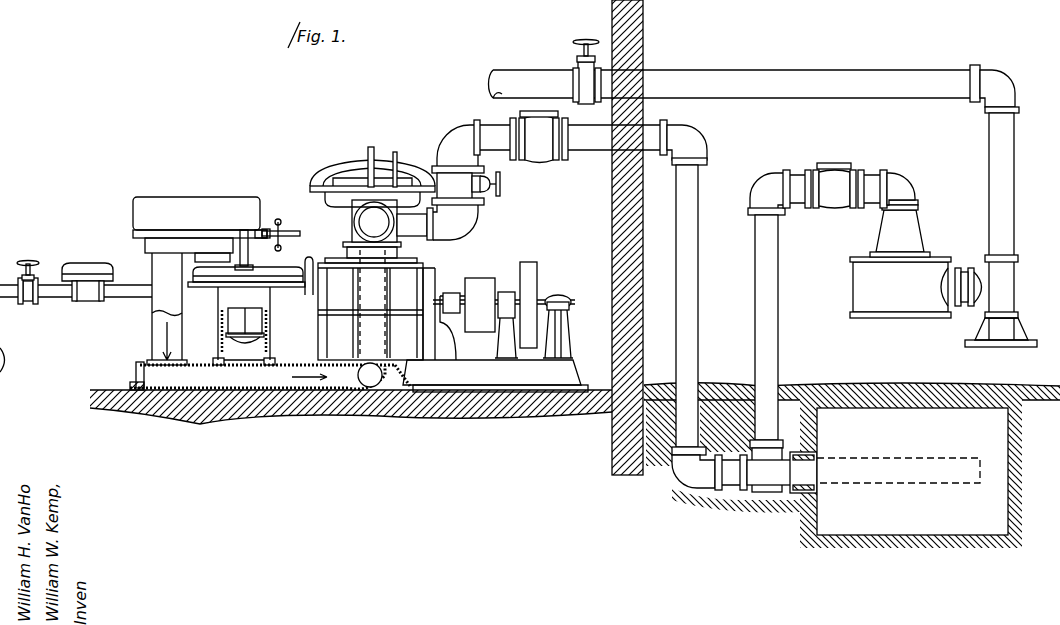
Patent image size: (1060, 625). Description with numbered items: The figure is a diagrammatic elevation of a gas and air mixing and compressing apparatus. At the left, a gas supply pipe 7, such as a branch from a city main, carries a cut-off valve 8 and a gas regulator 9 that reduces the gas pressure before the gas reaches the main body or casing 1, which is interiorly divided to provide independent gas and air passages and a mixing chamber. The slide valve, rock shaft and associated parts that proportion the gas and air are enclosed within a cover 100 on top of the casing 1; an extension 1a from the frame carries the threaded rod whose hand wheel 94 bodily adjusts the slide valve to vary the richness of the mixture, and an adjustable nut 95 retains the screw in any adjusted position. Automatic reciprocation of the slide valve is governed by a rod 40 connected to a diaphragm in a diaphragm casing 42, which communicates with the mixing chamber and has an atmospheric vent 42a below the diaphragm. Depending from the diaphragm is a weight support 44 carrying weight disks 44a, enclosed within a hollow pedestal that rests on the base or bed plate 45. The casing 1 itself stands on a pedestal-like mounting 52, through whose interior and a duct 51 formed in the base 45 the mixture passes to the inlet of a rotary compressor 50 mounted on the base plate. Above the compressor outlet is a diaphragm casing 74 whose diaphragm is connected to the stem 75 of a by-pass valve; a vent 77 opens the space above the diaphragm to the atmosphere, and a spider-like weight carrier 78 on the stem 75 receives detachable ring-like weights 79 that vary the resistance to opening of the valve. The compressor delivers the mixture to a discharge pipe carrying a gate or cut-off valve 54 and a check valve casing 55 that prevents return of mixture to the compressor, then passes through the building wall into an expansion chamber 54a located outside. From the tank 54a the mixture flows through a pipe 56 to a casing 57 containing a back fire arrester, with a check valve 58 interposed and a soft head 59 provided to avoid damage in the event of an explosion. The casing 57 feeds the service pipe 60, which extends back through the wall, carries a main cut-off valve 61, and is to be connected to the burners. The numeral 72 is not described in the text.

The main body or casing 1 is at (200, 246).
The extension from the frame 1a is at (256, 236).
The gas supply pipe 7 is at (118, 297).
The cut-off valve 8 is at (31, 268).
The gas regulator 9 is at (90, 266).
The rod 40 is at (250, 259).
The diaphragm casing 42 is at (206, 286).
The atmospheric vent 42a is at (309, 259).
The weight support 44 is at (246, 320).
The weight disks 44a is at (228, 341).
The base or bed plate 45 is at (291, 388).
The rotary compressor 50 is at (426, 272).
The passage or duct 51 is at (224, 392).
The pedestal-like mounting 52 is at (158, 334).
The gate or cut-off valve 54 is at (500, 184).
The expansion chamber 54a is at (857, 526).
The check valve casing 55 is at (545, 160).
The pipe 56 is at (774, 266).
The back fire arrester casing 57 is at (895, 304).
The check valve 58 is at (828, 201).
The soft head 59 is at (1003, 341).
The service pipe 60 is at (763, 79).
The main cut-off valve 61 is at (580, 54).
The pipe 72 is at (362, 381).
The diaphragm casing 74 is at (325, 198).
The valve stem 75 is at (368, 153).
The vent 77 is at (396, 156).
The spider-like weight carrier 78 is at (346, 167).
The ring-like weights 79 is at (330, 177).
The hand wheel 94 is at (283, 235).
The adjustable nut 95 is at (272, 230).
The cover 100 is at (196, 213).